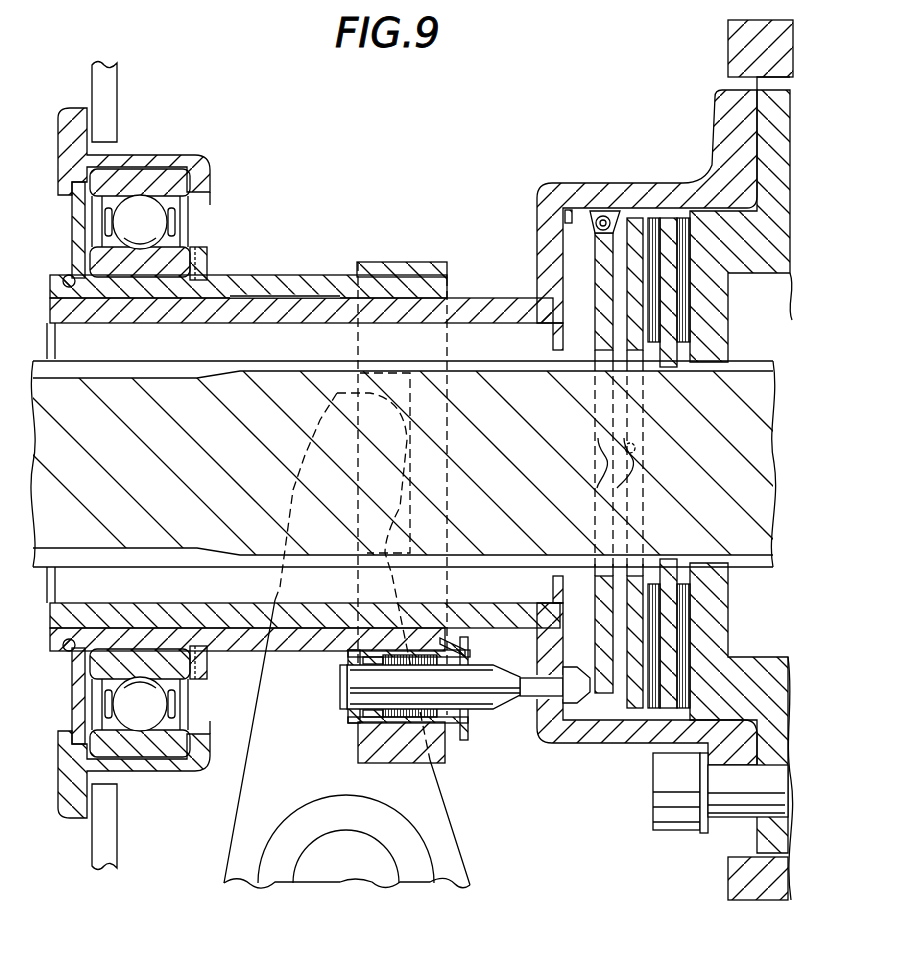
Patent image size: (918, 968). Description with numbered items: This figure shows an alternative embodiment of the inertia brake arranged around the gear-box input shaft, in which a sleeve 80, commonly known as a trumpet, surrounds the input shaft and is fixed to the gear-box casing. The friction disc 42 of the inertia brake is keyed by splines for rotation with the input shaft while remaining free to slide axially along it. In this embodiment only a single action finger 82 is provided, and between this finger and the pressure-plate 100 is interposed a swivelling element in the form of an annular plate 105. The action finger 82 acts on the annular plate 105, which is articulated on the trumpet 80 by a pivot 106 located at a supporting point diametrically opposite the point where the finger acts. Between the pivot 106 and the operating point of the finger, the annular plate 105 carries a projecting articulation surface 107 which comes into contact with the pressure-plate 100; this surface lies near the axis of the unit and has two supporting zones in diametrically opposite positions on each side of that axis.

The sleeve 80 is at (483, 298).
The action finger 82 is at (491, 720).
The friction disc 42 is at (661, 216).
The pressure-plate 100 is at (629, 704).
The annular plate 105 is at (604, 699).
The pivot 106 is at (605, 214).
The articulation surface 107 is at (624, 449).